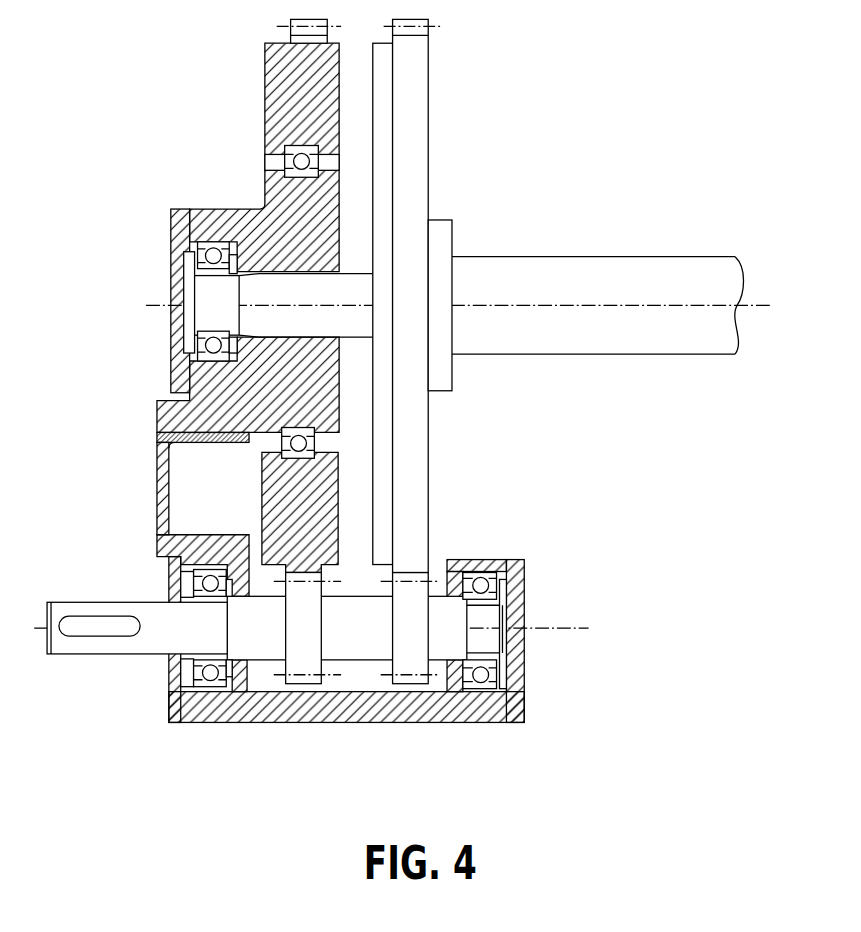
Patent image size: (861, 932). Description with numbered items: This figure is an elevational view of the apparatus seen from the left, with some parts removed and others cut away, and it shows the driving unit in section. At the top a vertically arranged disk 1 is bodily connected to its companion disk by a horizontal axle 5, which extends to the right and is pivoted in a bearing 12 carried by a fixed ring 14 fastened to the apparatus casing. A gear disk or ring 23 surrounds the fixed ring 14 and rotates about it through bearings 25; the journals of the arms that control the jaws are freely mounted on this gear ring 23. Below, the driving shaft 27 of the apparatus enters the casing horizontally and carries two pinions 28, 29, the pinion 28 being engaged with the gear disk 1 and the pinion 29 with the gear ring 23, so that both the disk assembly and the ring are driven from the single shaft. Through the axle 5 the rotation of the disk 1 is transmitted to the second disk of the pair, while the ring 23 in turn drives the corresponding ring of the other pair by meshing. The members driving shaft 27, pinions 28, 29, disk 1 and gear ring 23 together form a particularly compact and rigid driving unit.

The disk 1 is at (425, 103).
The horizontal axle 5 is at (568, 343).
The bearing 12 is at (208, 342).
The fixed ring 14 is at (228, 215).
The gear ring 23 is at (273, 65).
The bearing 25 is at (285, 157).
The driving shaft 27 is at (118, 645).
The pinion 28 is at (407, 657).
The pinion 29 is at (300, 653).